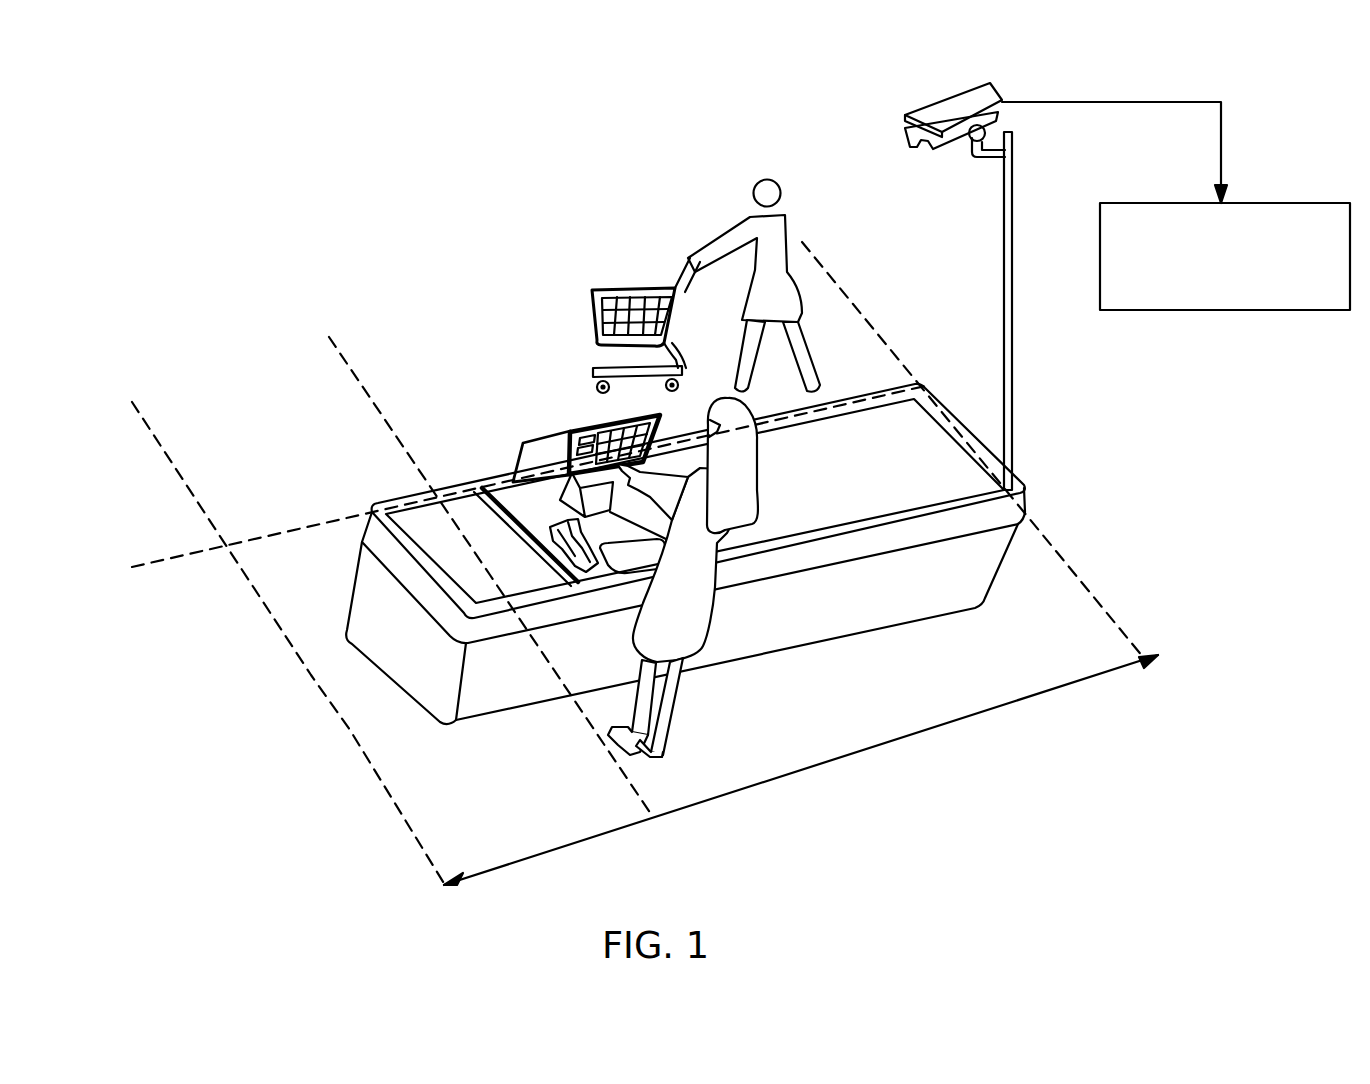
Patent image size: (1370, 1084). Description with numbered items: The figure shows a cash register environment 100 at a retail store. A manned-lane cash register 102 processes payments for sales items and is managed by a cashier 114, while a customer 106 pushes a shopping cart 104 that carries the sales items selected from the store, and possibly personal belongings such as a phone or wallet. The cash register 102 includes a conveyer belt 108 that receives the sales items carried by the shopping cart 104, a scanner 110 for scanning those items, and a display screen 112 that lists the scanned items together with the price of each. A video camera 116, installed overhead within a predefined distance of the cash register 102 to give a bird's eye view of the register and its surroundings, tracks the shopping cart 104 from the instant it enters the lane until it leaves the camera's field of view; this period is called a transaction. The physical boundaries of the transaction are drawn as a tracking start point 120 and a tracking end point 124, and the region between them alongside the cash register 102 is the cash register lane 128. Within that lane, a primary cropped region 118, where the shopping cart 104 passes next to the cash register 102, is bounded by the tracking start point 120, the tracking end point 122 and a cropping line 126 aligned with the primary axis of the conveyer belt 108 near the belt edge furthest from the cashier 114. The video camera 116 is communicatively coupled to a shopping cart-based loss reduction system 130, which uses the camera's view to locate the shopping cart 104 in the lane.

The cash register environment 100 is at (174, 720).
The manned-lane cash register 102 is at (685, 579).
The shopping cart 104 is at (603, 288).
The customer 106 is at (762, 179).
The conveyer belt 108 is at (877, 422).
The scanner 110 is at (548, 537).
The display screen 112 is at (580, 432).
The cashier 114 is at (670, 730).
The video camera 116 is at (1000, 92).
The primary cropped region 118 is at (928, 730).
The tracking start point 120 is at (840, 282).
The tracking end point 122 is at (143, 417).
The tracking end point 124 is at (342, 352).
The cropping line 126 is at (138, 562).
The cash register lane 128 is at (511, 296).
The shopping cart-based loss reduction system 130 is at (1100, 258).